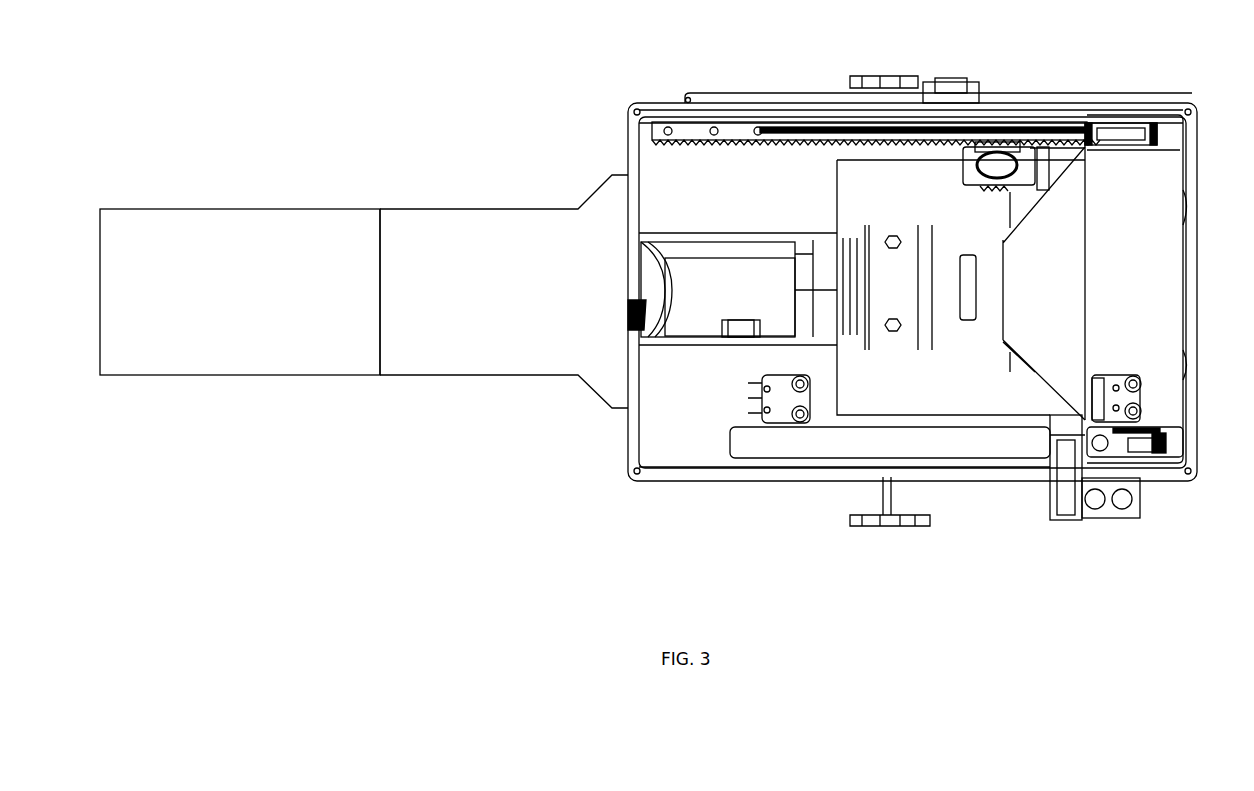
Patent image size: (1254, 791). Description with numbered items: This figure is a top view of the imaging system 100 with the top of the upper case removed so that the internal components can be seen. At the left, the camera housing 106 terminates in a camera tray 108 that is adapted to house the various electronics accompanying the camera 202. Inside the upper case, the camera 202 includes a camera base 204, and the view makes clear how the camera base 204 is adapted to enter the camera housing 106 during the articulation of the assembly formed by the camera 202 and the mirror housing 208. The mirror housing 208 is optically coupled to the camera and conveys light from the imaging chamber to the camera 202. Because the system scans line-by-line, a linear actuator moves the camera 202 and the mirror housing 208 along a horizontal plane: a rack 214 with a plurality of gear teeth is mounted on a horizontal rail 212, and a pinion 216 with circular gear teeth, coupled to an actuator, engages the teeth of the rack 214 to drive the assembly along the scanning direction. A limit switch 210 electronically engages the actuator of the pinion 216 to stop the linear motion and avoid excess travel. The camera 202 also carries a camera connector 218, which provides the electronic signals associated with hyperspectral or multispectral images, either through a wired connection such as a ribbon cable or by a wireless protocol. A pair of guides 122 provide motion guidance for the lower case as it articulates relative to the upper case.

The imaging system 100 is at (180, 84).
The camera housing 106 is at (445, 209).
The camera tray 108 is at (260, 209).
The guides 122 is at (958, 82).
The camera 202 is at (620, 236).
The camera base 204 is at (690, 242).
The mirror housing 208 is at (1148, 165).
The limit switch 210 is at (1140, 390).
The horizontal rail 212 is at (835, 125).
The rack 214 is at (682, 122).
The pinion 216 is at (997, 165).
The camera connector 218 is at (750, 396).